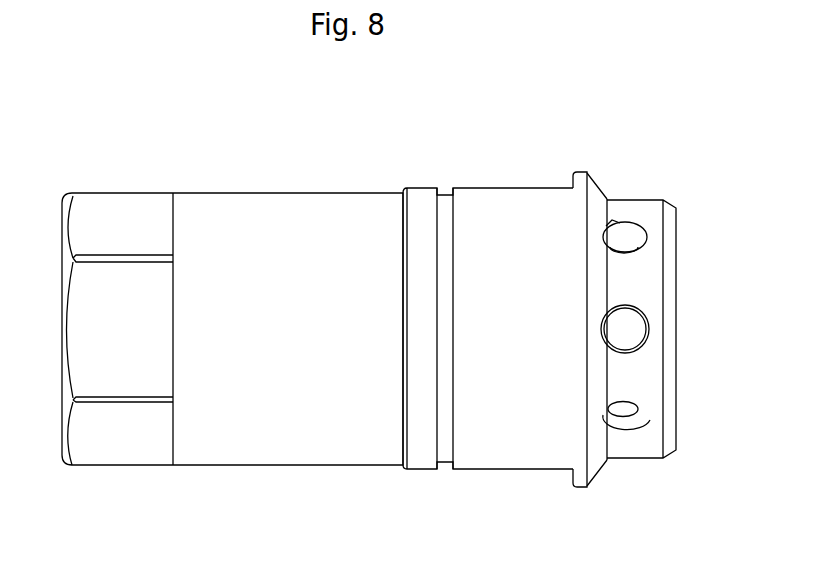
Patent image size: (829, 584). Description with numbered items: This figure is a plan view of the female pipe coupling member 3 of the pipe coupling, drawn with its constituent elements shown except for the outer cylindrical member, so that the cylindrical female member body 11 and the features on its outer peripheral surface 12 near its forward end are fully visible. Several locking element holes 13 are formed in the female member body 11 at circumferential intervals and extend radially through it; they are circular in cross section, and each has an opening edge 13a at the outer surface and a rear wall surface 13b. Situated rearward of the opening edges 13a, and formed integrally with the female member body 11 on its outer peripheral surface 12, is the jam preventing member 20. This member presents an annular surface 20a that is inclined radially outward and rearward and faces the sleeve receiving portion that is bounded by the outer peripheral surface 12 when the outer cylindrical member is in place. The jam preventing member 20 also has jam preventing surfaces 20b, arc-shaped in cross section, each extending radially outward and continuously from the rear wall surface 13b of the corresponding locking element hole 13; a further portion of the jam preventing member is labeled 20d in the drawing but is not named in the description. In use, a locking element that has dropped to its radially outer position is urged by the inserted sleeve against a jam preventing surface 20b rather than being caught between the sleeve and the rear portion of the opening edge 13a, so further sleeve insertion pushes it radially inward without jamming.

The female pipe coupling member 3 is at (103, 163).
The cylindrical female member body 11 is at (293, 228).
The outer peripheral surface 12 is at (652, 200).
The locking element holes 13 is at (630, 325).
The opening edges 13a is at (632, 233).
The rear wall surfaces 13b is at (647, 307).
The jam preventing member 20 is at (580, 177).
The annular surface 20a is at (600, 193).
The jam preventing surfaces 20b is at (603, 330).
The notch 20d is at (618, 222).